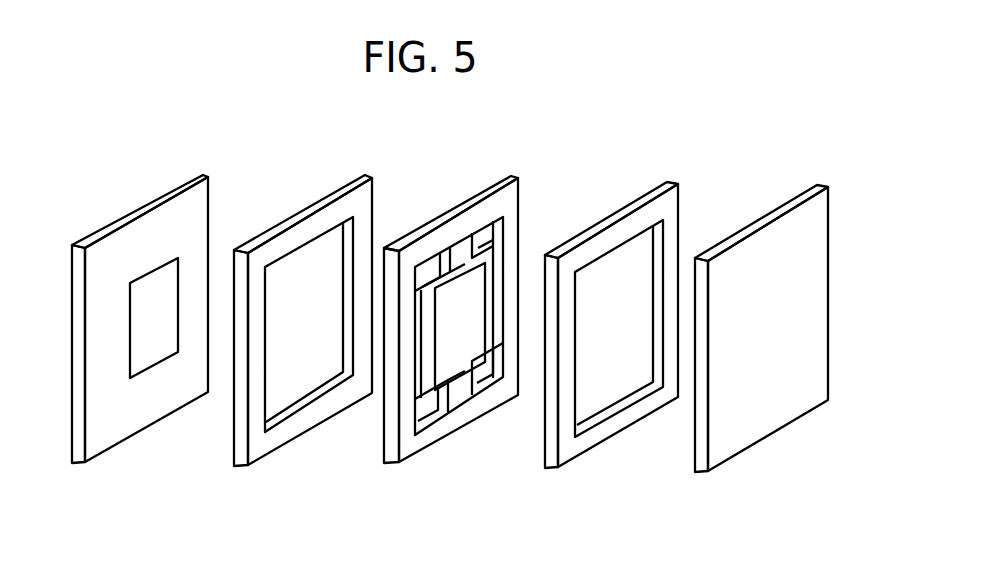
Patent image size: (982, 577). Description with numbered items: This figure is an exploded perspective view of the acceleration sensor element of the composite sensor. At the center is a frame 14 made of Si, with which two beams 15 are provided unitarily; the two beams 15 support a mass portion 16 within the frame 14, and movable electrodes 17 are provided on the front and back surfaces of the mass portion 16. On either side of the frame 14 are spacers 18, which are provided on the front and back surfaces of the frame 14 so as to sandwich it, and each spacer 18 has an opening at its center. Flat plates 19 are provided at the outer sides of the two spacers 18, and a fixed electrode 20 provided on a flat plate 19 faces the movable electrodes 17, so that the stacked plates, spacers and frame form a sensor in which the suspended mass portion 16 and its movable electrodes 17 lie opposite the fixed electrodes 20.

The frame 14 is at (415, 252).
The beam 15 is at (460, 253).
The mass portion 16 is at (488, 257).
The movable electrode 17 is at (465, 322).
The spacer 18 is at (300, 232).
The flat plate 19 is at (118, 245).
The fixed electrode 20 is at (150, 288).